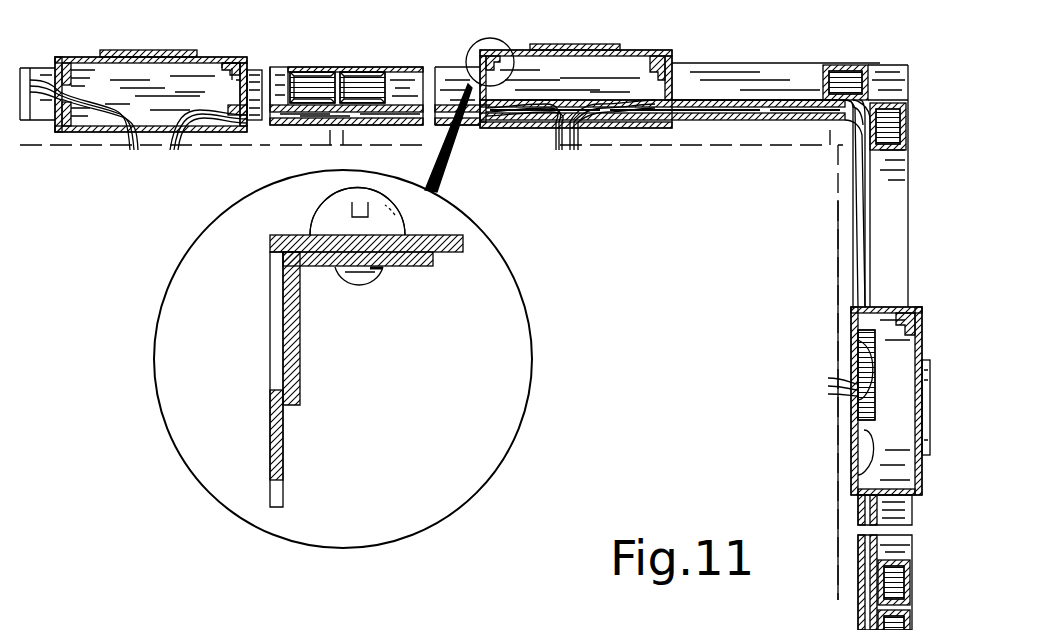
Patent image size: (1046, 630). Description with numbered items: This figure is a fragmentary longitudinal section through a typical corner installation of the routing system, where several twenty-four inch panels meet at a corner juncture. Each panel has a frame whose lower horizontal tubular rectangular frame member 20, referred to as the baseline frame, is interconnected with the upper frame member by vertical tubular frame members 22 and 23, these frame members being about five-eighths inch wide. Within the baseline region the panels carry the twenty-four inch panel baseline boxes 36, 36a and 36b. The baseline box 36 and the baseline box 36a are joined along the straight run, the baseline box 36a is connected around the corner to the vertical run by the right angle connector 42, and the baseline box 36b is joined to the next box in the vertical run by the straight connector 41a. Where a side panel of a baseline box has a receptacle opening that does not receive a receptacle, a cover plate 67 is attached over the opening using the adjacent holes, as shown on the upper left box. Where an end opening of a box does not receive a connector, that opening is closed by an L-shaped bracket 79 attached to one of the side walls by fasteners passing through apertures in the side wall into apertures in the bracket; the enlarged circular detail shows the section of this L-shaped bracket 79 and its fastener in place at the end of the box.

The lower horizontal tubular rectangular frame member 20 is at (450, 66).
The vertical tubular frame member 22 is at (357, 68).
The vertical tubular frame member 23 is at (837, 65).
The baseline box 36 is at (205, 57).
The baseline box 36a is at (640, 50).
The baseline box 36b is at (853, 345).
The straight connector 41a is at (858, 623).
The right angle connector 42 is at (792, 124).
The cover plate 67 is at (113, 50).
The L-shaped bracket 79 is at (230, 62).